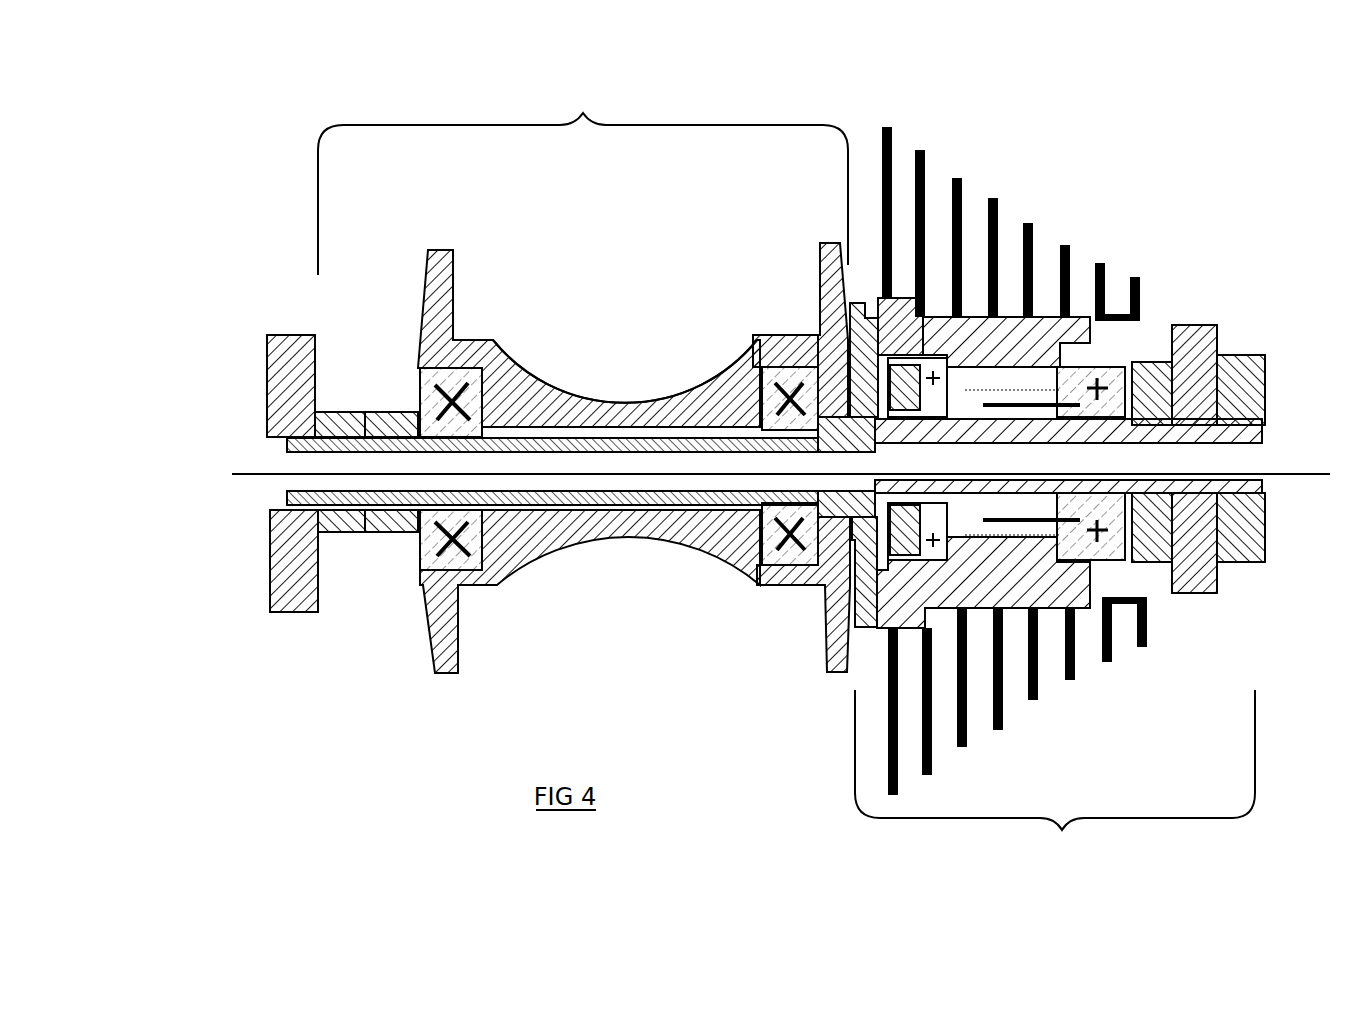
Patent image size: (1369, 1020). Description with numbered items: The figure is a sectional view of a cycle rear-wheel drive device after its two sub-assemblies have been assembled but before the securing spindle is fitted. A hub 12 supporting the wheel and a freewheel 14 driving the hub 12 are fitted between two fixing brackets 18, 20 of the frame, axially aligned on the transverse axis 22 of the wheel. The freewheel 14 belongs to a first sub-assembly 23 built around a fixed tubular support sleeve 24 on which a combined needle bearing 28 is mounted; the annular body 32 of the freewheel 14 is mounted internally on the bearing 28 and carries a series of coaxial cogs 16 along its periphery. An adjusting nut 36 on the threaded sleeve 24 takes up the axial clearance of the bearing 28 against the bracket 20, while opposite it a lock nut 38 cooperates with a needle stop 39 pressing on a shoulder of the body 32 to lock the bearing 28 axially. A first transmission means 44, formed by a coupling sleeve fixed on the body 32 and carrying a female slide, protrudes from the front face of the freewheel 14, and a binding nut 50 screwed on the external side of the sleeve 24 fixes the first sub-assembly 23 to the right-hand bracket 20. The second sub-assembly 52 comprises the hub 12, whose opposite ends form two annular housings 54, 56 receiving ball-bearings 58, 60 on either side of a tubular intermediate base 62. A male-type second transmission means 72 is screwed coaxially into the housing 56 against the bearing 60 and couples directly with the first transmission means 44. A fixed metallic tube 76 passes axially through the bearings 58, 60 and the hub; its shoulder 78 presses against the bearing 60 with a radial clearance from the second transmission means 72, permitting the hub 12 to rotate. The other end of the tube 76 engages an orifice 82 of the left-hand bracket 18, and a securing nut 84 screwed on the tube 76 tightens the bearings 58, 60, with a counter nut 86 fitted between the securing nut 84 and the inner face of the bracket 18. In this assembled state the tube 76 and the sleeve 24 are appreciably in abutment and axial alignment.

The hub 12 is at (530, 538).
The freewheel 14 is at (1122, 702).
The cogs 16 is at (1033, 700).
The fixing bracket 18 is at (272, 604).
The fixing bracket 20 is at (1197, 568).
The transverse axis 22 is at (258, 478).
The first sub-assembly 23 is at (1046, 896).
The support sleeve 24 is at (1035, 493).
The combined needle bearing 28 is at (1078, 395).
The annular body 32 is at (1008, 328).
The adjusting nut 36 is at (1148, 535).
The lock nut 38 is at (910, 320).
The needle stop 39 is at (948, 325).
The first transmission means 44 is at (862, 318).
The binding nut 50 is at (1247, 542).
The second sub-assembly 52 is at (600, 91).
The annular housing 54 is at (478, 345).
The annular housing 56 is at (760, 345).
The ball-bearing 58 is at (437, 387).
The ball-bearing 60 is at (797, 355).
The tubular intermediate base 62 is at (512, 390).
The second transmission means 72 is at (836, 370).
The fixed metallic tube 76 is at (590, 452).
The shoulder 78 is at (870, 452).
The orifice 82 is at (275, 437).
The securing nut 84 is at (397, 413).
The counter nut 86 is at (340, 532).